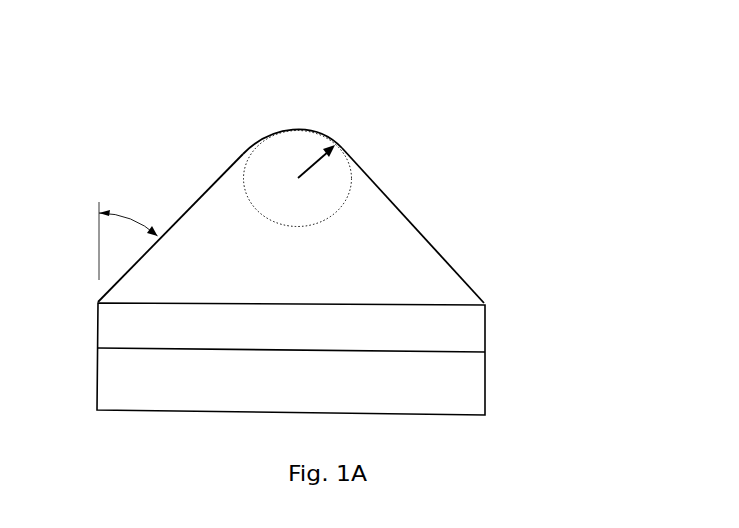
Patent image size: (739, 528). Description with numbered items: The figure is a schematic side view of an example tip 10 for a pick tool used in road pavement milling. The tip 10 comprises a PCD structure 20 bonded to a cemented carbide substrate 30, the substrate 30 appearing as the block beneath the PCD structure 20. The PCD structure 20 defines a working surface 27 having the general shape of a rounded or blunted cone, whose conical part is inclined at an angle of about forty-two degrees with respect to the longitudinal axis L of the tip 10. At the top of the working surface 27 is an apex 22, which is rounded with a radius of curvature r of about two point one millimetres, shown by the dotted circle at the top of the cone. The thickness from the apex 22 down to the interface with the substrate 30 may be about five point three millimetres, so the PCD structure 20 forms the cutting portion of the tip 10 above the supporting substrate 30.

The tip 10 is at (126, 75).
The PCD structure 20 is at (366, 226).
The apex 22 is at (298, 128).
The working surface 27 is at (438, 248).
The cemented carbide substrate 30 is at (452, 330).